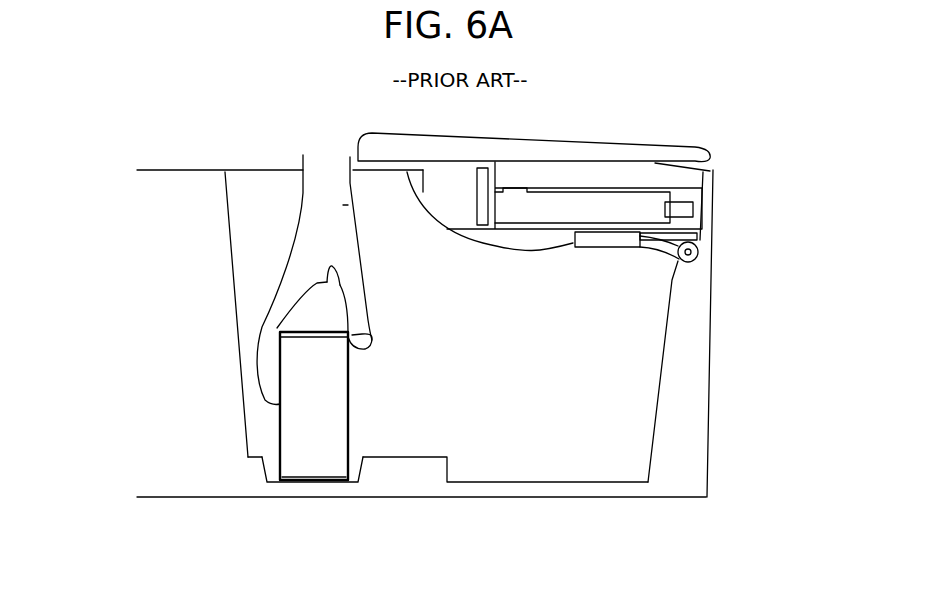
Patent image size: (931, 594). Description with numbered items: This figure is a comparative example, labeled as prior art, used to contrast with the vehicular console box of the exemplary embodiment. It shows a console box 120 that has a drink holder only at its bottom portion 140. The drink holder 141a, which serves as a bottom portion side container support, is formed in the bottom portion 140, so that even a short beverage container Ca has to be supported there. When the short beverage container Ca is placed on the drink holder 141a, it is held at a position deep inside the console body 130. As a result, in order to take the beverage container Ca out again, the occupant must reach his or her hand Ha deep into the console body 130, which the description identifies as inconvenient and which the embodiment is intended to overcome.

The console box 120 is at (154, 121).
The console body 130 is at (733, 418).
The bottom portion 140 is at (438, 457).
The drink holder 141a is at (307, 477).
The short beverage container Ca is at (278, 404).
The hand Ha is at (303, 187).